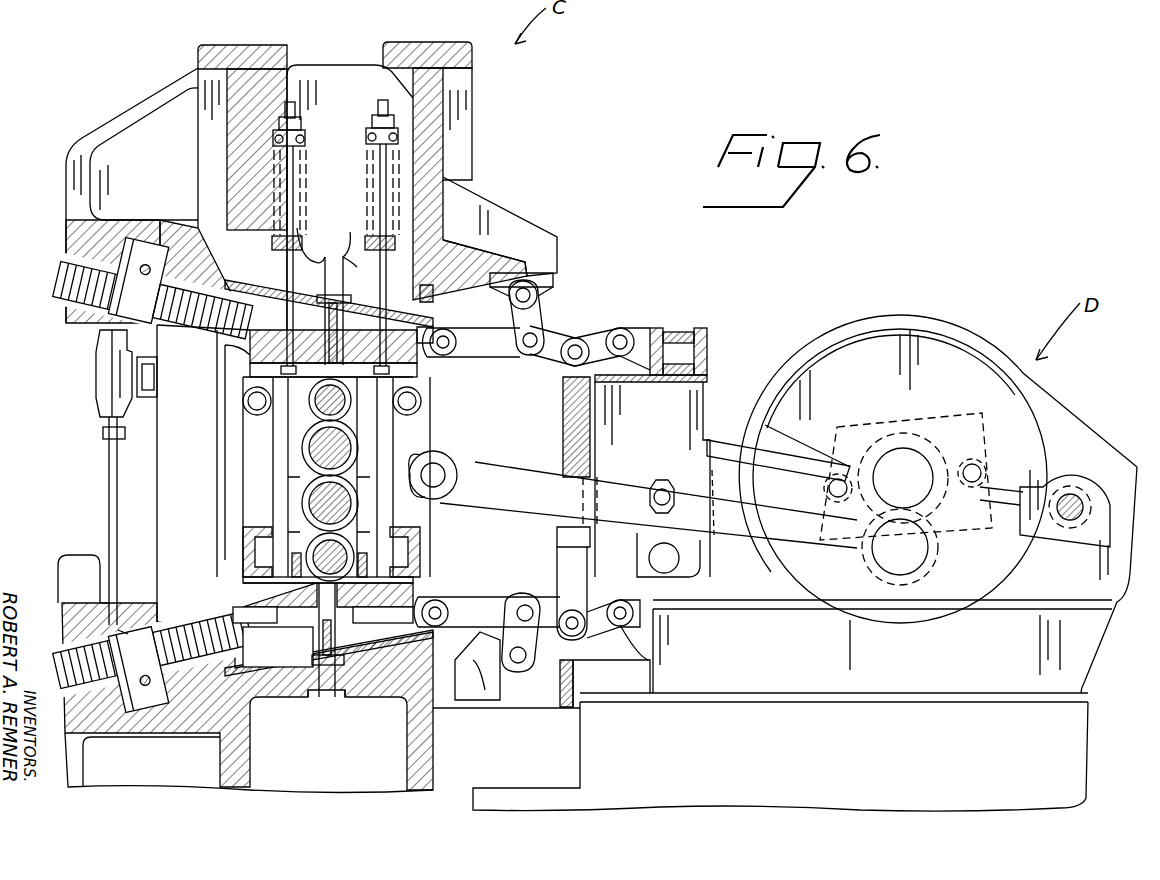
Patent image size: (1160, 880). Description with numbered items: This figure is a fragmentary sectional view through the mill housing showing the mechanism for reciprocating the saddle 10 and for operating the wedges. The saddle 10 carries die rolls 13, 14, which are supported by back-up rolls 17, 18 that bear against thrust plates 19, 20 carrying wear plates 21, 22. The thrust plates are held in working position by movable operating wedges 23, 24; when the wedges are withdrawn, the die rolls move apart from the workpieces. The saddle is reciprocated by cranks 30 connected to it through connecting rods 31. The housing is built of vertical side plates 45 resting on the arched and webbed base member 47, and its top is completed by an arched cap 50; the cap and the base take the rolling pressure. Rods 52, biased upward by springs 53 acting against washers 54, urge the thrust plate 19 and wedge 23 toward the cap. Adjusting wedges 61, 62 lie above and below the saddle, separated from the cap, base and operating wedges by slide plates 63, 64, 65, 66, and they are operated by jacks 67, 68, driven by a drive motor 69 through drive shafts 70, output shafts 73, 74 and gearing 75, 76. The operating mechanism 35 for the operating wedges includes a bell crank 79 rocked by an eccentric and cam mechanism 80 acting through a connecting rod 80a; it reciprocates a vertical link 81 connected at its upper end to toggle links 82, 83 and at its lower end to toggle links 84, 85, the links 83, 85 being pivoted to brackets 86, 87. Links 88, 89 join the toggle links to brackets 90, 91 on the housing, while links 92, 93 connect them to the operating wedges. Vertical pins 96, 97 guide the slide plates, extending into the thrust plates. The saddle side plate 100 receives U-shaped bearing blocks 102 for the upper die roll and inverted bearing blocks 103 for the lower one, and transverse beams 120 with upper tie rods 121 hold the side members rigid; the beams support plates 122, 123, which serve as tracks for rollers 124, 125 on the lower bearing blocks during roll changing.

The saddle 10 is at (216, 426).
The die roll 13 is at (312, 462).
The die roll 14 is at (318, 502).
The back-up roll 17 is at (305, 440).
The back-up roll 18 is at (325, 675).
The thrust plate 19 is at (246, 372).
The thrust plate 20 is at (265, 585).
The wear plate 21 is at (240, 395).
The wear plate 22 is at (425, 585).
The operating wedge 23 is at (435, 362).
The operating wedge 24 is at (480, 585).
The crank 30 is at (930, 590).
The connecting rod 31 is at (755, 610).
The operating mechanism 35 is at (545, 565).
The side plate 45 is at (60, 560).
The base member 47 is at (440, 740).
The cap 50 is at (142, 118).
The rod 52 is at (372, 170).
The spring 53 is at (350, 145).
The washer 54 is at (276, 138).
The adjusting wedge 61 is at (240, 333).
The adjusting wedge 62 is at (225, 603).
The slide plate 63 is at (312, 245).
The slide plate 64 is at (245, 352).
The slide plate 65 is at (210, 590).
The slide plate 66 is at (276, 700).
The jack 67 is at (58, 270).
The jack 68 is at (58, 672).
The drive motor 69 is at (98, 380).
The drive shaft 70 is at (108, 472).
The output shaft 73 is at (144, 240).
The output shaft 74 is at (146, 700).
The gearing 75 is at (130, 310).
The gearing 76 is at (120, 632).
The bell crank 79 is at (603, 537).
The crank plate 80 is at (873, 437).
The connecting rod 80a is at (733, 480).
The vertical link 81 is at (566, 400).
The toggle link 82 is at (570, 338).
The toggle link 83 is at (618, 328).
The toggle link 84 is at (582, 712).
The toggle link 85 is at (612, 650).
The bracket 86 is at (668, 328).
The bracket 87 is at (650, 660).
The link 88 is at (535, 358).
The link 89 is at (522, 600).
The bracket 90 is at (545, 290).
The bracket 91 is at (475, 662).
The link 92 is at (490, 325).
The link 93 is at (470, 635).
The vertical pin 96 is at (330, 258).
The vertical pin 97 is at (358, 690).
The side plate 100 is at (216, 468).
The bearing block 102 is at (386, 432).
The bearing block 103 is at (462, 493).
The transverse beam 120 is at (250, 560).
The tie rod 121 is at (252, 412).
The transverse supporting plate 122 is at (278, 647).
The transverse supporting plate 123 is at (380, 690).
The roller 124 is at (250, 540).
The roller 125 is at (370, 540).